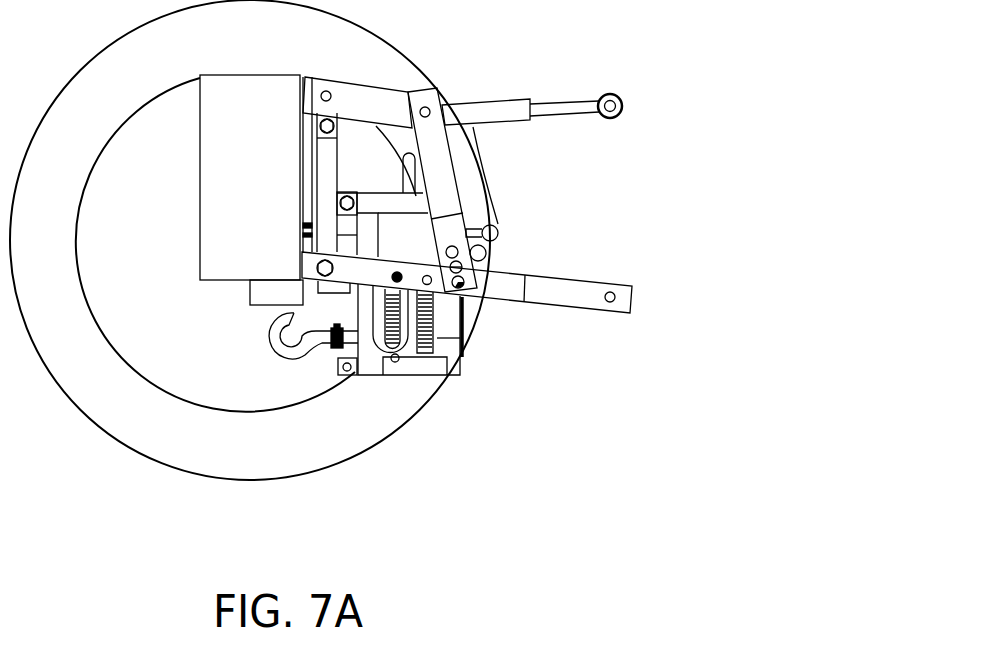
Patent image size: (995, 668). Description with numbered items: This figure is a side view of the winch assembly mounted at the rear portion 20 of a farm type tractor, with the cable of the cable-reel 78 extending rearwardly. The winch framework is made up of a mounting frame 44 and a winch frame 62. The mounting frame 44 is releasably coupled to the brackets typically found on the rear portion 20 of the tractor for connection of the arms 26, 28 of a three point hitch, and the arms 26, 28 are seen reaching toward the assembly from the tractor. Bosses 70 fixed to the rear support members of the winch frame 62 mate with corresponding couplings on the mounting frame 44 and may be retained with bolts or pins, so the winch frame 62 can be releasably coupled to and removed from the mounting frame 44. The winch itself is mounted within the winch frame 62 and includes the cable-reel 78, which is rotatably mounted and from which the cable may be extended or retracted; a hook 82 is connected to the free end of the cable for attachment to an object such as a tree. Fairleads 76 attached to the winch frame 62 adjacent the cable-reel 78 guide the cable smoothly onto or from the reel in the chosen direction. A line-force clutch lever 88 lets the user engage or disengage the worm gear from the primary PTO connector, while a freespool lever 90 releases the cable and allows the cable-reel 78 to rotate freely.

The rear portion 20 is at (244, 113).
The arm 26 is at (542, 100).
The arm 28 is at (627, 280).
The mounting frame 44 is at (312, 190).
The winch frame 62 is at (465, 404).
The boss 70 is at (348, 376).
The fairlead 76 is at (382, 372).
The cable-reel 78 is at (458, 344).
The hook 82 is at (268, 338).
The line-force clutch lever 88 is at (497, 226).
The freespool lever 90 is at (487, 253).